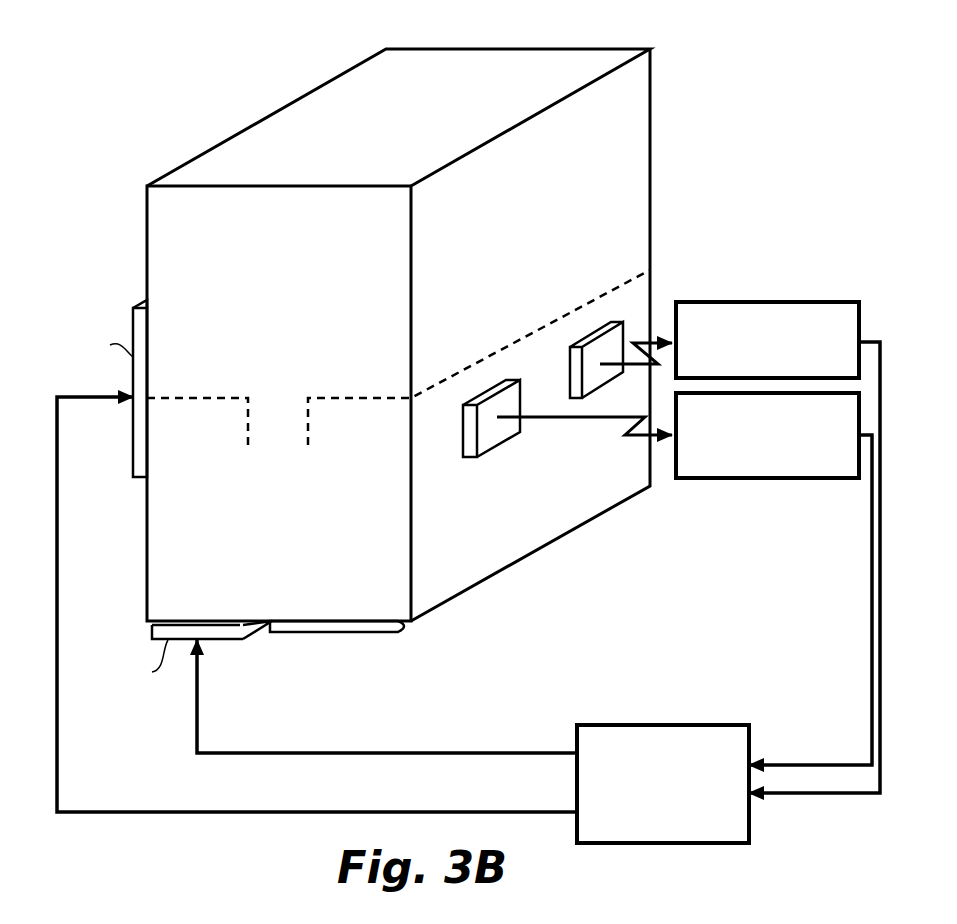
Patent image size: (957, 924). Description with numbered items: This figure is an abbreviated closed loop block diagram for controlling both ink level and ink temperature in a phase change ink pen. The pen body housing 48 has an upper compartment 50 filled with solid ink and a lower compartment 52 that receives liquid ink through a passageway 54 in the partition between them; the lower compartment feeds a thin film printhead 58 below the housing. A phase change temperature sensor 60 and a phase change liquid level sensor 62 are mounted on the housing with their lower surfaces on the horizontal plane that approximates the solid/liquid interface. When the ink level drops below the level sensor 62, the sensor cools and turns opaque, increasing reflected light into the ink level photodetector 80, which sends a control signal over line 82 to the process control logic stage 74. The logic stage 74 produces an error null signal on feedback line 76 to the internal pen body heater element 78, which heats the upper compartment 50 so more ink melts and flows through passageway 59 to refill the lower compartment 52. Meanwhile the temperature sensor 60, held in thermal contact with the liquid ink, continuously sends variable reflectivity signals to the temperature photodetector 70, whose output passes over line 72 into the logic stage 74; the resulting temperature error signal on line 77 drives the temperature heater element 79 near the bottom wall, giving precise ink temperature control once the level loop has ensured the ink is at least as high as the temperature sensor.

The pen body housing 48 is at (393, 47).
The upper compartment 50 is at (293, 283).
The lower compartment 52 is at (279, 523).
The passageway 54 is at (158, 495).
The thin film printhead 58 is at (410, 627).
The passageway 59 is at (273, 430).
The temperature sensor 60 is at (572, 366).
The liquid level sensor 62 is at (470, 450).
The temperature photodetector 70 is at (802, 302).
The line 72 is at (823, 795).
The process control logic stage 74 is at (692, 845).
The feedback line 76 is at (193, 815).
The line 77 is at (452, 753).
The internal pen body heater element 78 is at (135, 305).
The temperature heater element 79 is at (240, 640).
The ink level photodetector 80 is at (730, 481).
The line 82 is at (872, 510).